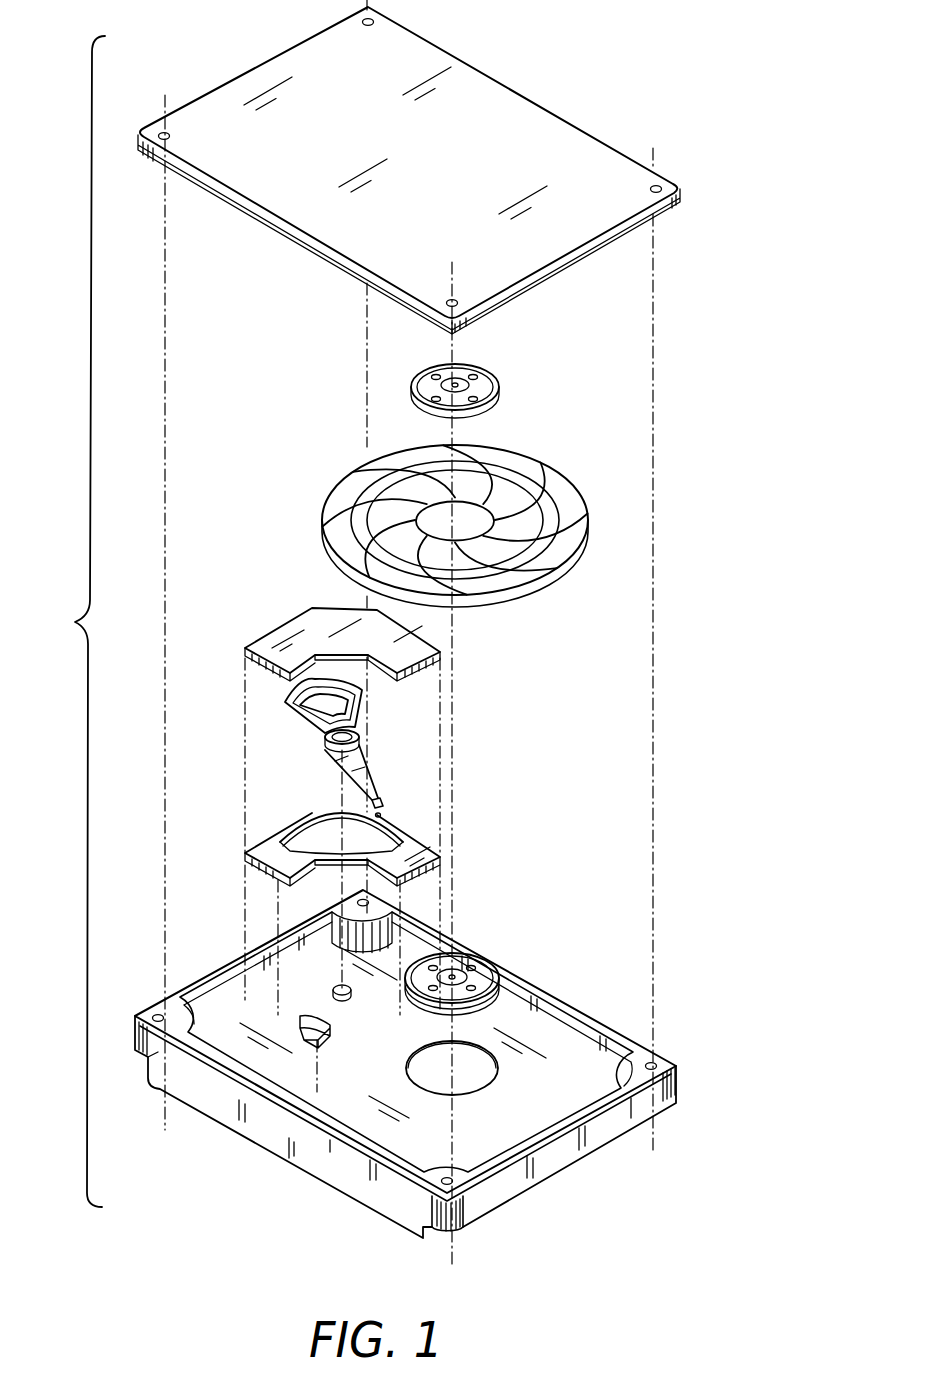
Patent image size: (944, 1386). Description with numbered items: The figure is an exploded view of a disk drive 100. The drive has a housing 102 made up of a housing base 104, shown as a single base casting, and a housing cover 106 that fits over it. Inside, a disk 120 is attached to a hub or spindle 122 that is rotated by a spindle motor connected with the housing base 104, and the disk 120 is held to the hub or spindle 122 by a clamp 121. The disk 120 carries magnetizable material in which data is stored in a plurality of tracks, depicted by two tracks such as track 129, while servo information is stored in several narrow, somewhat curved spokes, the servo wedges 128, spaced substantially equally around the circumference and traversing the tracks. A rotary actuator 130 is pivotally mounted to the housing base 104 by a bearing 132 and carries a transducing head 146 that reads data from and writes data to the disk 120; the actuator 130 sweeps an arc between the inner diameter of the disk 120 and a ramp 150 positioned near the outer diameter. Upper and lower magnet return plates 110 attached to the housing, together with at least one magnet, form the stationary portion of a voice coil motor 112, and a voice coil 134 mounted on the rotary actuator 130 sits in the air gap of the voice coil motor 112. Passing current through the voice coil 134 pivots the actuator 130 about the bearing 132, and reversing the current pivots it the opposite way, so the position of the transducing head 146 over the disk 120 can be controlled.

The disk drive 100 is at (678, 498).
The housing 102 is at (71, 621).
The housing base 104 is at (247, 1122).
The housing cover 106 is at (502, 97).
The upper and lower magnet return plates 110 is at (266, 674).
The voice coil motor 112 is at (243, 613).
The disk 120 is at (478, 512).
The clamp 121 is at (485, 381).
The hub or spindle 122 is at (478, 960).
The servo wedges 128 is at (586, 532).
The track 129 is at (542, 507).
The rotary actuator 130 is at (390, 748).
The bearing 132 is at (360, 738).
The voice coil 134 is at (295, 719).
The transducing head 146 is at (381, 799).
The ramp 150 is at (338, 1035).